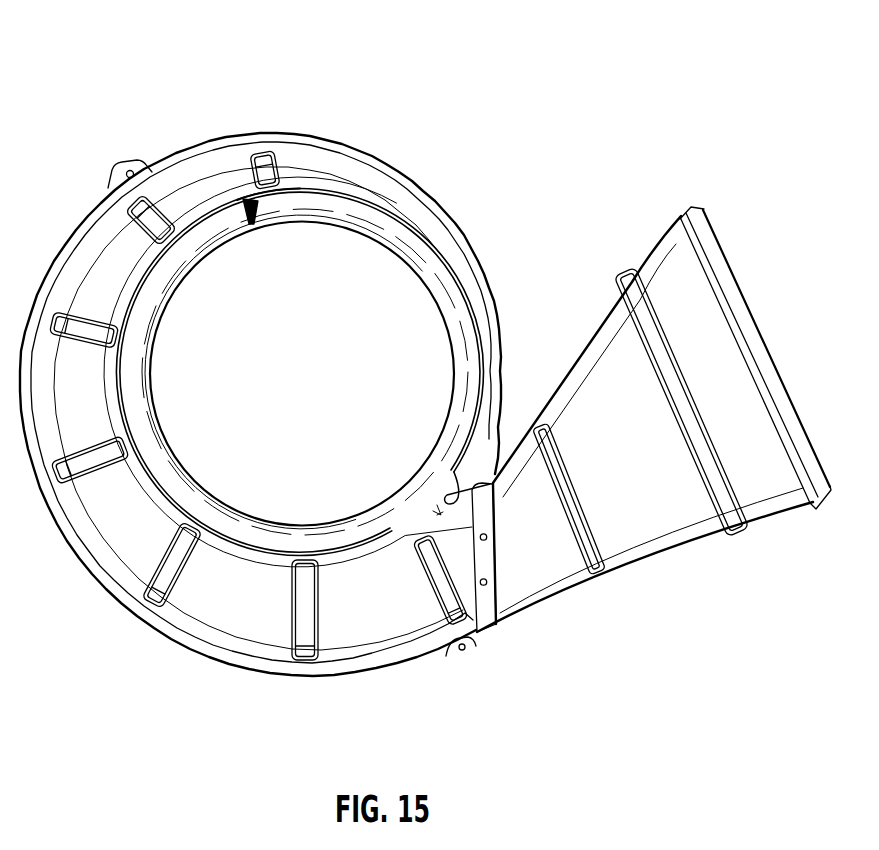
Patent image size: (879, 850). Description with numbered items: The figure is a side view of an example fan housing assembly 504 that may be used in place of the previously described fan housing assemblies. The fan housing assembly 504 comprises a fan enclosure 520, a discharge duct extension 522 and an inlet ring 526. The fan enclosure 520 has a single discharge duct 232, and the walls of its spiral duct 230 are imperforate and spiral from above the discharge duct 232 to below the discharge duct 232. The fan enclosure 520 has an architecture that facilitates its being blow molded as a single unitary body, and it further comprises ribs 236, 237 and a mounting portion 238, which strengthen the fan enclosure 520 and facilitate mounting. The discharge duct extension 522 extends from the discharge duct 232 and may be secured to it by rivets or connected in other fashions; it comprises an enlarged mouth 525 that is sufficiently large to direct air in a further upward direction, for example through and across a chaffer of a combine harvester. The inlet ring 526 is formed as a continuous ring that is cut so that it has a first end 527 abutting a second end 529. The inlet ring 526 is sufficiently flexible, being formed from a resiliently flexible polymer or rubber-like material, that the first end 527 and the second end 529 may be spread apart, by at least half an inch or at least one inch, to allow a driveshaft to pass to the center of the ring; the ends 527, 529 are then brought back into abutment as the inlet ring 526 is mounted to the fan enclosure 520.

The fan housing assembly 504 is at (155, 68).
The spiral duct 230 is at (423, 192).
The fan enclosure 520 is at (373, 150).
The rib 236 is at (233, 135).
The rib 237 is at (313, 613).
The mounting portion 238 is at (118, 172).
The inlet ring 526 is at (220, 503).
The first end 527 is at (260, 218).
The second end 529 is at (248, 212).
The discharge duct extension 522 is at (657, 240).
The enlarged mouth 525 is at (730, 268).
The discharge duct 232 is at (480, 630).